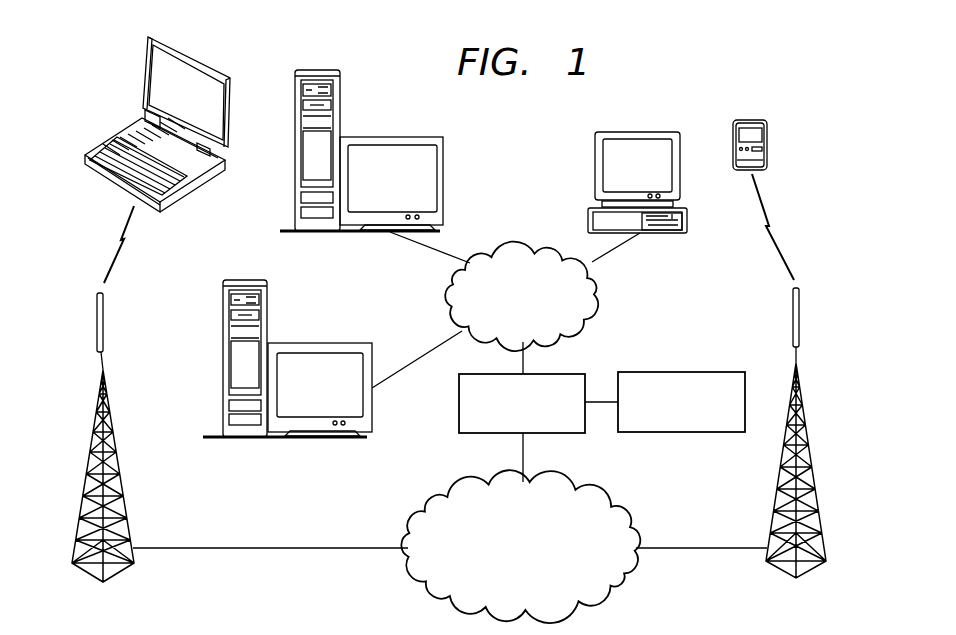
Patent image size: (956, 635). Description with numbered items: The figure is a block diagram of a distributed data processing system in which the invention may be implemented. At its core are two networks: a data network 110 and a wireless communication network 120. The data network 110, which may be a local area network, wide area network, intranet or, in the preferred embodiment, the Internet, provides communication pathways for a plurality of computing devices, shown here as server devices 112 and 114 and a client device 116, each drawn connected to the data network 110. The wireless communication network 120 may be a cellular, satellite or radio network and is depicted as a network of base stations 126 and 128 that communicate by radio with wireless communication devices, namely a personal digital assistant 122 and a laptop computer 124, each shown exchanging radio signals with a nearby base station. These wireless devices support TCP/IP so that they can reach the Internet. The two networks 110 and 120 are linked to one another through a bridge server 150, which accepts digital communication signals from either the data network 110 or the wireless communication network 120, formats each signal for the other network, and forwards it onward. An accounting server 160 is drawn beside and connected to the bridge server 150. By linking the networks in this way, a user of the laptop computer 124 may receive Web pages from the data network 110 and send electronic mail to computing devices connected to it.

The data network 110 is at (525, 252).
The server device 112 is at (387, 137).
The server device 114 is at (318, 343).
The client device 116 is at (638, 132).
The wireless communication network 120 is at (410, 578).
The personal digital assistant 122 is at (750, 120).
The laptop computer 124 is at (145, 73).
The base station 126 is at (815, 567).
The base station 128 is at (90, 573).
The bridge server 150 is at (458, 403).
The accounting server 160 is at (682, 433).